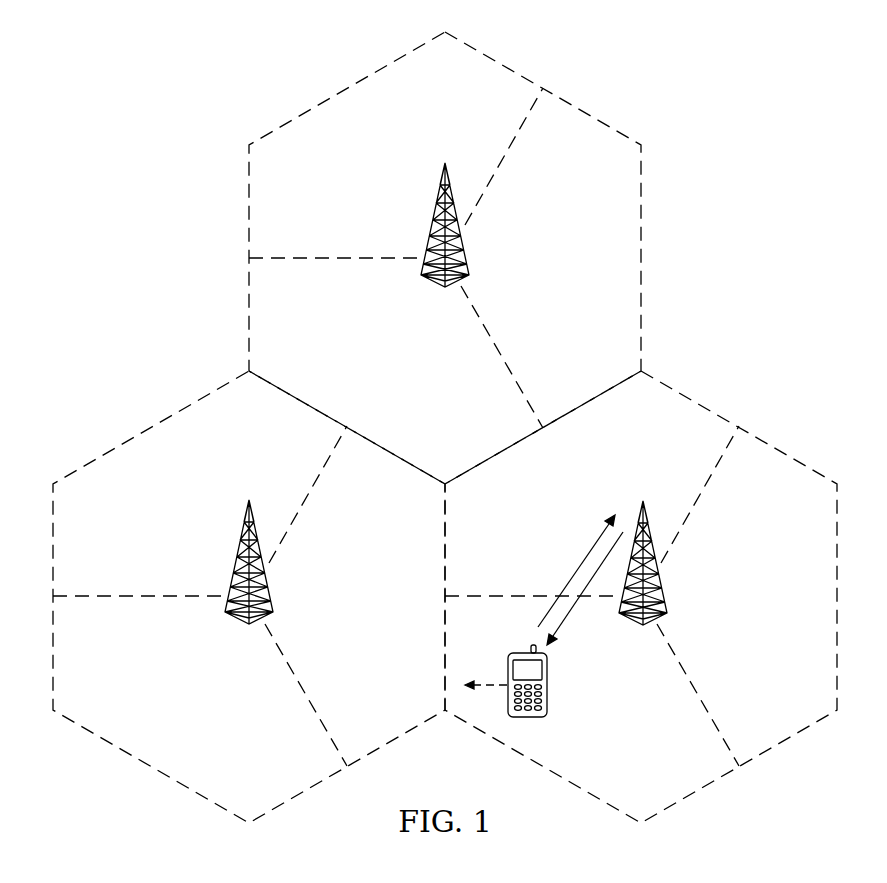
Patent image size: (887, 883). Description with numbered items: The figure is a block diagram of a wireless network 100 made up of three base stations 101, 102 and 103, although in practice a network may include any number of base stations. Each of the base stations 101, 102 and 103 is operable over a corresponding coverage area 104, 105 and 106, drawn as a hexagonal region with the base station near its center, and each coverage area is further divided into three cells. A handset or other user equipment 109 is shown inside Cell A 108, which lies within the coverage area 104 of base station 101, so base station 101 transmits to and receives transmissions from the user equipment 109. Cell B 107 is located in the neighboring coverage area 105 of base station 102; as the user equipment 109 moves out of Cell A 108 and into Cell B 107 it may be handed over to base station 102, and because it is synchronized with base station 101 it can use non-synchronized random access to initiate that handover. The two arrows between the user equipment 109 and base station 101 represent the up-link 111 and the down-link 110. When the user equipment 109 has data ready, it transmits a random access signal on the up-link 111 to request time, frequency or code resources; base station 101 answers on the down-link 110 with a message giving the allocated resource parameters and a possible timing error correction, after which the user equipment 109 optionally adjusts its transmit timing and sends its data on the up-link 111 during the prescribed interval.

The wireless network 100 is at (276, 90).
The base station 101 is at (668, 583).
The base station 102 is at (237, 553).
The base station 103 is at (432, 213).
The coverage area 104 is at (710, 782).
The coverage area 105 is at (183, 781).
The coverage area 106 is at (577, 104).
The Cell B 107 is at (352, 616).
The Cell A 108 is at (629, 462).
The user equipment 109 is at (528, 652).
The down-link 110 is at (575, 612).
The up-link 111 is at (588, 552).